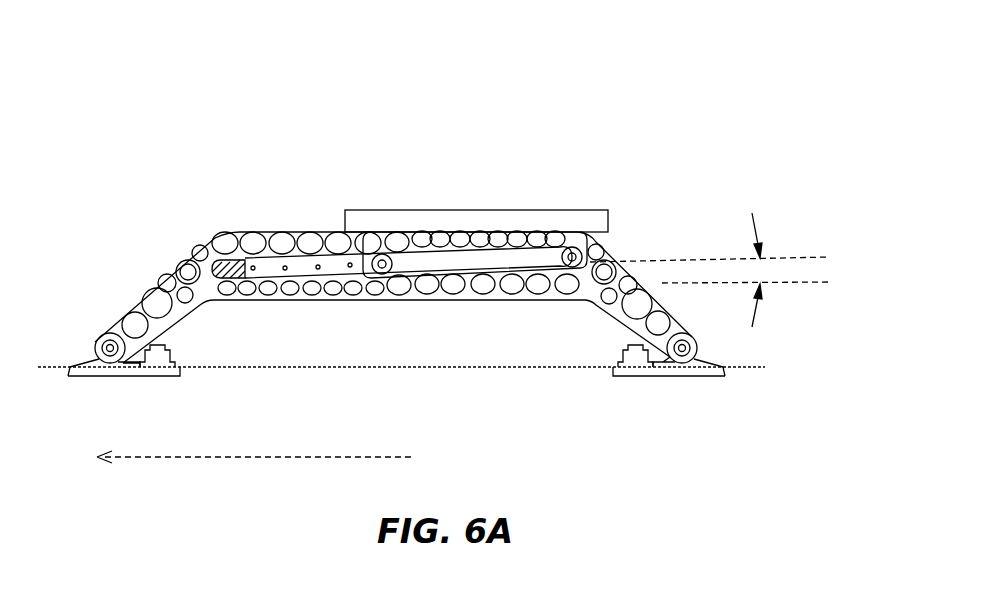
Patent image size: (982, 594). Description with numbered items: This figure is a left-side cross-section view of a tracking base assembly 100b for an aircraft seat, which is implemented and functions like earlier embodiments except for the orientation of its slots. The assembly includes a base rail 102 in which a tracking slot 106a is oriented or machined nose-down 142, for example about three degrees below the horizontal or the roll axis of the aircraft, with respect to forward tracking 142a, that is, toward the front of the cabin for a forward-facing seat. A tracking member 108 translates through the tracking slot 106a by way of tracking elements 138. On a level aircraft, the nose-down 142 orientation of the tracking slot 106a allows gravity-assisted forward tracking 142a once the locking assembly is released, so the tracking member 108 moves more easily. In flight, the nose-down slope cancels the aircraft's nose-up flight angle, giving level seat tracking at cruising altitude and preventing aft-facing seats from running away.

The tracking base assembly 100b is at (138, 77).
The base rail 102 is at (610, 255).
The tracking slot 106a is at (268, 268).
The tracking member 108 is at (460, 220).
The tracking element 138 is at (381, 272).
The nose-down orientation 142 is at (777, 270).
The forward tracking 142a is at (207, 455).